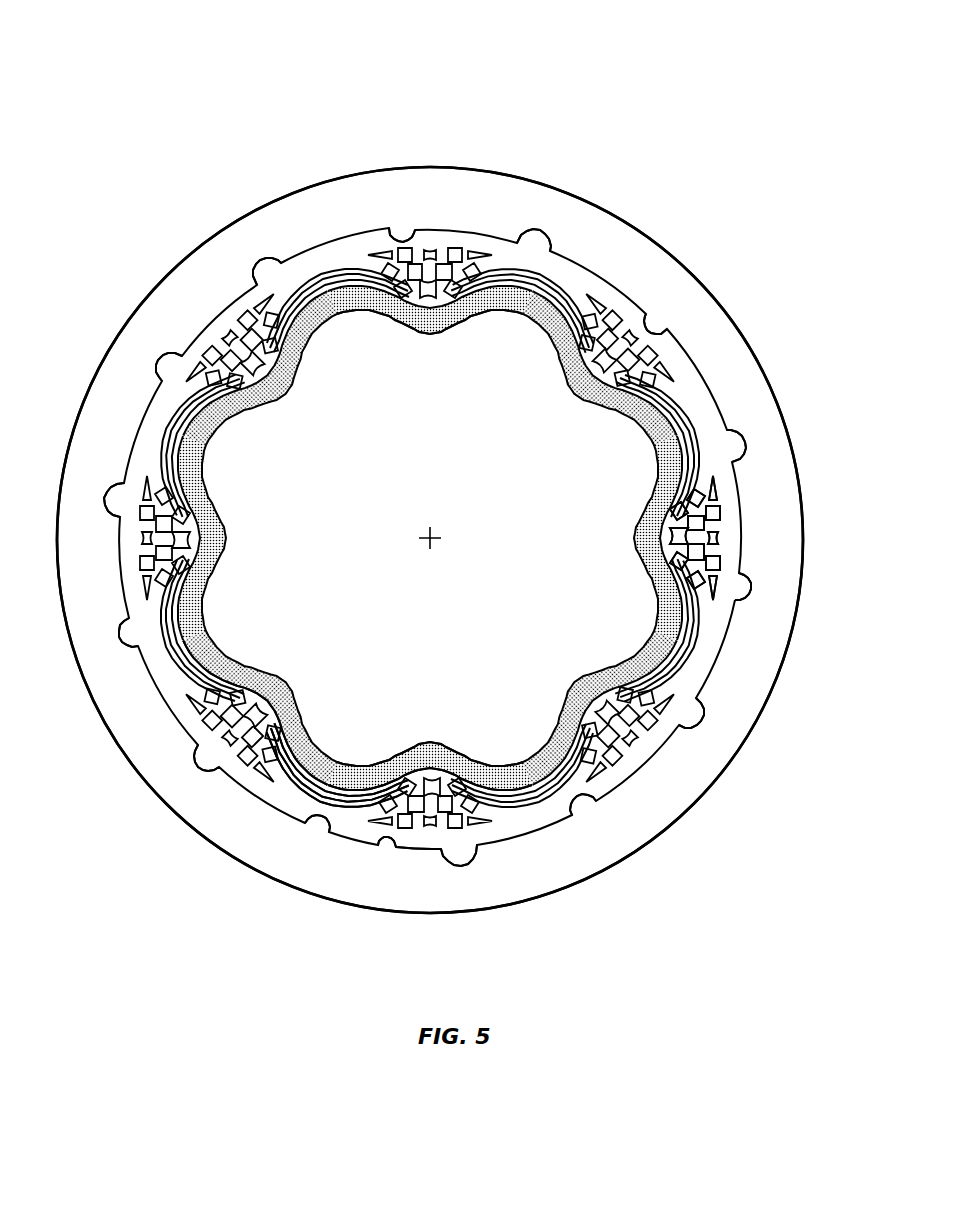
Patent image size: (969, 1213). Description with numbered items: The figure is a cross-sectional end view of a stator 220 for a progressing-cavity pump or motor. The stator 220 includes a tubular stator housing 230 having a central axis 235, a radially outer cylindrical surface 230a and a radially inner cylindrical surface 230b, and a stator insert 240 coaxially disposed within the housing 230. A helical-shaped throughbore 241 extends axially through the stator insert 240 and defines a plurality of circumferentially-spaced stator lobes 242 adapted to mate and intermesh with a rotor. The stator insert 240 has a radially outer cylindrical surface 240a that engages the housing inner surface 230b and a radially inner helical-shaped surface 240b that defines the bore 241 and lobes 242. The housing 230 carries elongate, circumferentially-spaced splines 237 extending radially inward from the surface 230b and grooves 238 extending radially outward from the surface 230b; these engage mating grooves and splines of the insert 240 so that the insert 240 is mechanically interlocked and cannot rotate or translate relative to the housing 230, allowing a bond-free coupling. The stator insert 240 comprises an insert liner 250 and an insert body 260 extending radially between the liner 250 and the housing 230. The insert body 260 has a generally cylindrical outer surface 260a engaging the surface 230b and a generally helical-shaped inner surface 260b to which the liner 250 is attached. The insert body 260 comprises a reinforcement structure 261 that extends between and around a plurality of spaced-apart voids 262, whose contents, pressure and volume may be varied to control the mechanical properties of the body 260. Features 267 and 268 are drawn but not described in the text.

The stator 220 is at (124, 62).
The stator housing 230 is at (738, 368).
The radially outer cylindrical surface 230a is at (730, 301).
The radially inner cylindrical surface 230b is at (400, 850).
The central axis 235 is at (447, 523).
The splines 237 is at (655, 326).
The grooves 238 is at (112, 482).
The stator insert 240 is at (580, 270).
The radially outer cylindrical surface 240a is at (430, 874).
The radially inner helical-shaped surface 240b is at (430, 738).
The helical-shaped throughbore 241 is at (458, 611).
The stator lobes 242 is at (590, 400).
The insert liner 250 is at (430, 322).
The insert body 260 is at (300, 268).
The radially outer surface 260a is at (358, 832).
The inner surface 260b is at (258, 690).
The reinforcement structure 261 is at (722, 538).
The voids 262 is at (467, 300).
The outward protrusion 267 is at (540, 232).
The notch 268 is at (410, 238).